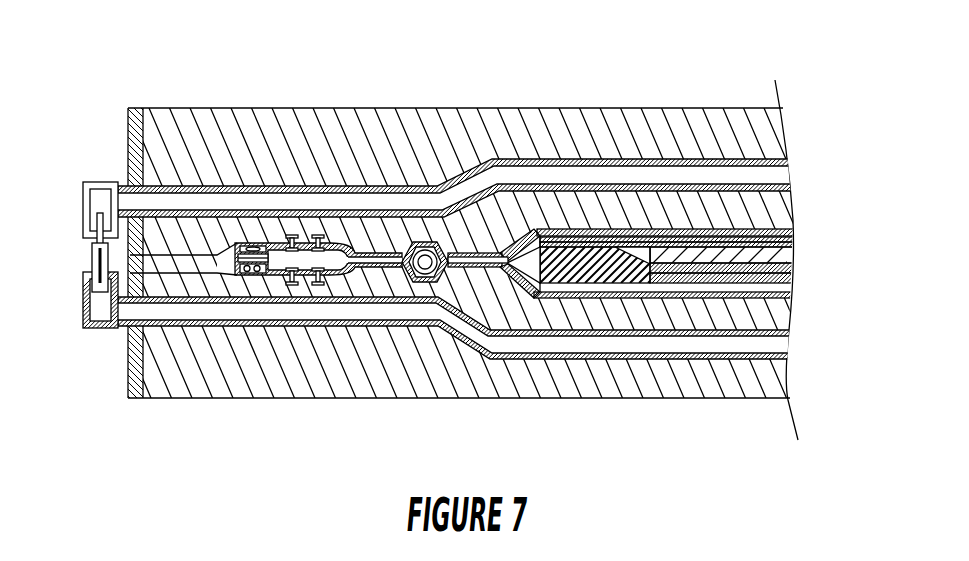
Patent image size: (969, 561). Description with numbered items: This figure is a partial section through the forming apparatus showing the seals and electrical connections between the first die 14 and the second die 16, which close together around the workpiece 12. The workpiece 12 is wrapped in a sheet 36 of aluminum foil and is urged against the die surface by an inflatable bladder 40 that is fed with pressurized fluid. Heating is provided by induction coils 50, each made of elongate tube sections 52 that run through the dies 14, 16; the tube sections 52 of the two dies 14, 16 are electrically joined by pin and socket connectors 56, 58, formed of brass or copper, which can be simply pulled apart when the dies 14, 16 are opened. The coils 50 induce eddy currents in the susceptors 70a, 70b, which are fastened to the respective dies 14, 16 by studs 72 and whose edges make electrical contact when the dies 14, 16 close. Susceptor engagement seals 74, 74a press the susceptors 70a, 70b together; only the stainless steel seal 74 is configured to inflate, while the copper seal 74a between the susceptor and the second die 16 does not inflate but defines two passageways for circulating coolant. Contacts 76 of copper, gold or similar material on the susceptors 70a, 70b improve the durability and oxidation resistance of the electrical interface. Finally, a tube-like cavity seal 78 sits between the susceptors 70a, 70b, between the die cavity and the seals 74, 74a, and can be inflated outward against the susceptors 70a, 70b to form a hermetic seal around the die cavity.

The workpiece 12 is at (787, 252).
The first die 14 is at (760, 142).
The second die 16 is at (775, 385).
The sheet 36 is at (589, 243).
The inflatable bladder 40 is at (516, 244).
The induction coil 50 is at (459, 122).
The elongate tube section 52 is at (277, 186).
The pin and socket connector 56 is at (82, 295).
The pin and socket connector 58 is at (82, 213).
The susceptor 70a is at (792, 233).
The susceptor 70b is at (783, 297).
The stud 72 is at (319, 236).
The susceptor engagement seal 74 is at (242, 247).
The susceptor engagement seal 74a is at (247, 275).
The contact 76 is at (238, 252).
The cavity seal 78 is at (420, 278).